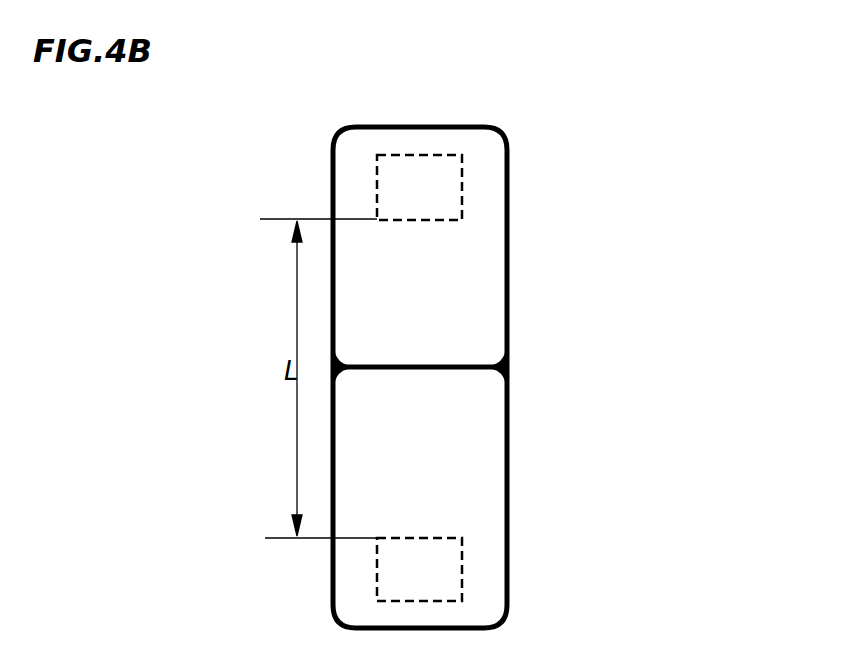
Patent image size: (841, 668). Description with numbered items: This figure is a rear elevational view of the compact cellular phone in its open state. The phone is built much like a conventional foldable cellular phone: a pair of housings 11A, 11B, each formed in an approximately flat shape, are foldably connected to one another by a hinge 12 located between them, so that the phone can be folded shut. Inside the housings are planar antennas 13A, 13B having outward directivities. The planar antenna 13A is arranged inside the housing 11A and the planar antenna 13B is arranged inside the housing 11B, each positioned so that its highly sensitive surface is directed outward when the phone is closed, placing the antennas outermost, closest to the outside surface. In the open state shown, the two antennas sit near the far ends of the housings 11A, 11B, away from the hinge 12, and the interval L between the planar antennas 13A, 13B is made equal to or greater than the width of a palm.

The housing 11A is at (507, 236).
The housing 11B is at (507, 490).
The hinge 12 is at (507, 367).
The planar antenna 13A is at (462, 163).
The planar antenna 13B is at (462, 597).